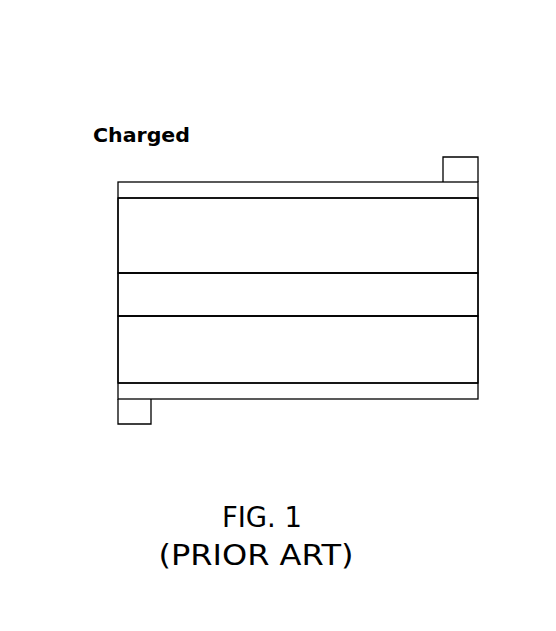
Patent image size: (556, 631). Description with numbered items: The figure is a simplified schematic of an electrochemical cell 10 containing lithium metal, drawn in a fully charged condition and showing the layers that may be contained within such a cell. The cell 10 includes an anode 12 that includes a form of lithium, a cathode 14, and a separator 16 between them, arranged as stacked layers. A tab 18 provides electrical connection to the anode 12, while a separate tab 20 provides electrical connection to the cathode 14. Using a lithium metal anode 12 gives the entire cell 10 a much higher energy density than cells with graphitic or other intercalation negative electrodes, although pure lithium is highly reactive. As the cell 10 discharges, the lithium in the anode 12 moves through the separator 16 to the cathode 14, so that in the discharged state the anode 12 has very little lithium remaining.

The electrochemical cell 10 is at (307, 81).
The anode 12 is at (119, 351).
The cathode 14 is at (119, 226).
The separator 16 is at (119, 287).
The tab 18 is at (119, 413).
The tab 20 is at (471, 163).